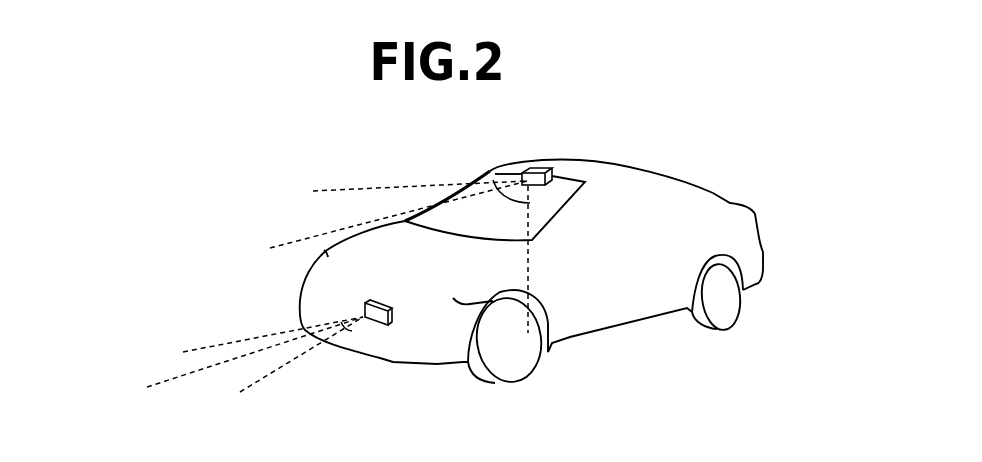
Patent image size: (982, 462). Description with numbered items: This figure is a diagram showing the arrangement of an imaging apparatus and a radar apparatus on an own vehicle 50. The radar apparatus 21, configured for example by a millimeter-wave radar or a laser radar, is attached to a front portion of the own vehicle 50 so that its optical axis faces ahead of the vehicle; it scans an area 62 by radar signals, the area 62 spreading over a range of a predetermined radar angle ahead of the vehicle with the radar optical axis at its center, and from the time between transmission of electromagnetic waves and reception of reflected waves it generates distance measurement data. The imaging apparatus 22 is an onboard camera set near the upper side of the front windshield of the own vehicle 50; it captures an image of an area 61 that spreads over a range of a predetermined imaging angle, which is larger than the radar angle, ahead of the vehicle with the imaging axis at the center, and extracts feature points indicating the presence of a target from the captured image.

The radar apparatus 21 is at (391, 316).
The imaging apparatus 22 is at (538, 168).
The own vehicle 50 is at (660, 162).
The area 61 is at (334, 188).
The area 62 is at (200, 350).